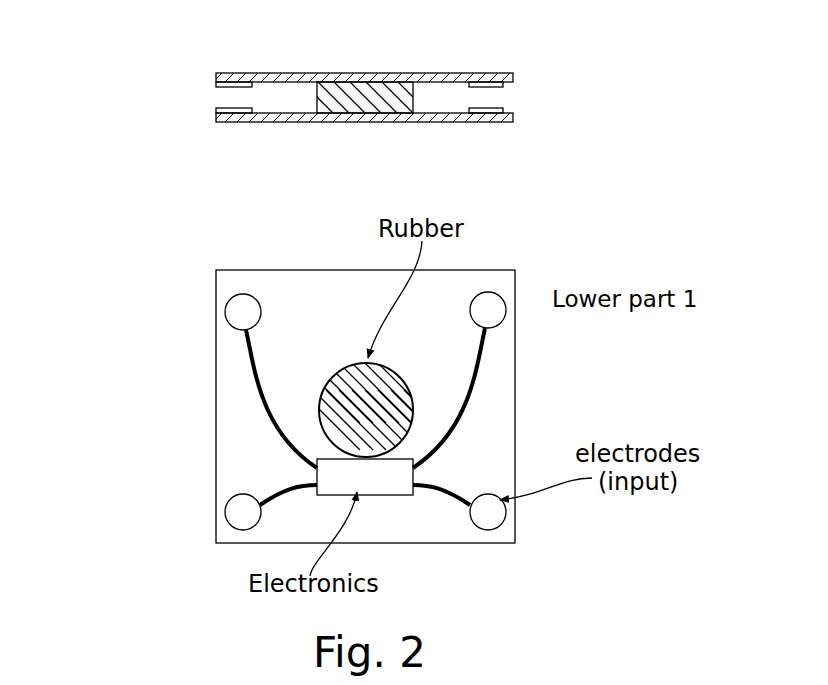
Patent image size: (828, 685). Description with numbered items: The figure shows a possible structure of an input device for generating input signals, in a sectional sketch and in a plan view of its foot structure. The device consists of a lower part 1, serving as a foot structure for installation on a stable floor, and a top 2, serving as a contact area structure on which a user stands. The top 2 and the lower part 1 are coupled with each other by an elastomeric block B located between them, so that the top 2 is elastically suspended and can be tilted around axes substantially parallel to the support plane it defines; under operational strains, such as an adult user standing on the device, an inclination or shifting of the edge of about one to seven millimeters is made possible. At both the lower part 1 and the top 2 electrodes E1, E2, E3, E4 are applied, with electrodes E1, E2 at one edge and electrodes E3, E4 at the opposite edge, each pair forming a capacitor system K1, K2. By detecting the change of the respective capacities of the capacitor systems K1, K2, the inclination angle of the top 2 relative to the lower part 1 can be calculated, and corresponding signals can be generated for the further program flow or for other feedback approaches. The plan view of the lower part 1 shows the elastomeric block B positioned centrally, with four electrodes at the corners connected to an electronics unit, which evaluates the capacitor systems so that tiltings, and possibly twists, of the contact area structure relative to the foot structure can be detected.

The lower part 1 is at (446, 123).
The top 2 is at (441, 73).
The elastomeric block B is at (382, 88).
The electrode E1 is at (215, 88).
The electrode E2 is at (215, 105).
The electrode E3 is at (503, 89).
The electrode E4 is at (503, 105).
The capacitor system K1 is at (164, 95).
The capacitor system K2 is at (546, 95).